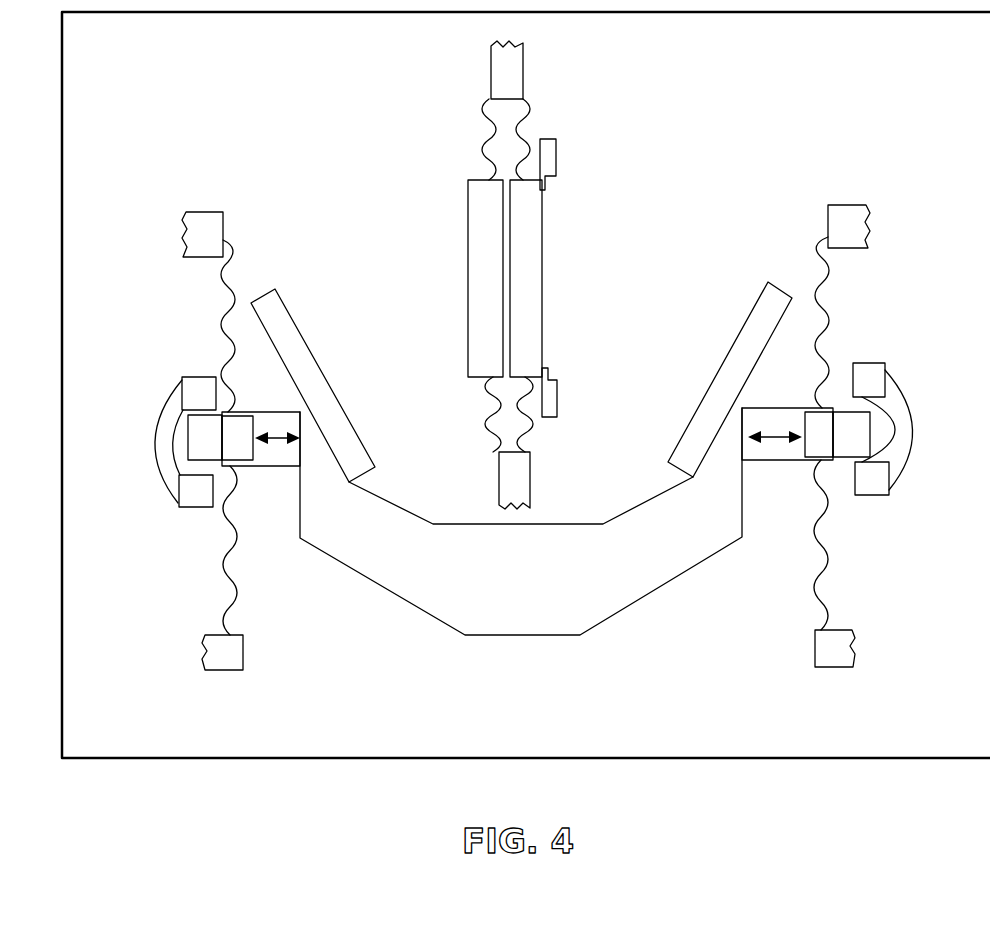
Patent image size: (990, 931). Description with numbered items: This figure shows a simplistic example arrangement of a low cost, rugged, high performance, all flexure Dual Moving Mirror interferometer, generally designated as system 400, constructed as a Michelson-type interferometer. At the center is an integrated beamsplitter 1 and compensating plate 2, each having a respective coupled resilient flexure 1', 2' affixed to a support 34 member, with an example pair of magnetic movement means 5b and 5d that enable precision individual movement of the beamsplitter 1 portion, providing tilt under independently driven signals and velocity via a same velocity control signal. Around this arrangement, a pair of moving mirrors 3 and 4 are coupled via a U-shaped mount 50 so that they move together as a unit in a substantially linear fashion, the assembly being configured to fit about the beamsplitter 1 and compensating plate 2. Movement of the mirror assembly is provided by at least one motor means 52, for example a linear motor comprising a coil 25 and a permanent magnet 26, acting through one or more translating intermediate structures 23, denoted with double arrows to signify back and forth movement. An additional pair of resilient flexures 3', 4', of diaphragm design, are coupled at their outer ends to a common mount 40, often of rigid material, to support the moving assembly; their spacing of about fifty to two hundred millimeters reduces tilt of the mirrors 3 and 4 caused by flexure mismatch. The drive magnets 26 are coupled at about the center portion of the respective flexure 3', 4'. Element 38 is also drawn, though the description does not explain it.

The all flexure interferometer system 400 is at (195, 75).
The U-shaped mount 50 is at (499, 596).
The moving mirror 3 is at (313, 379).
The moving mirror 4 is at (730, 379).
The translating intermediate structure 23 is at (256, 410).
The permanent magnet 26 is at (216, 453).
The coil 25 is at (190, 385).
The motor means 52 is at (152, 479).
The common mount 40 is at (203, 212).
The control lead 38 is at (245, 650).
The resilient flexure 3' is at (273, 428).
The resilient flexure 4' is at (779, 426).
The support member 34 is at (523, 52).
The resilient flexure 2' is at (439, 275).
The resilient flexure 1' is at (575, 267).
The compensating plate 2 is at (485, 278).
The beamsplitter 1 is at (526, 278).
The magnetic movement means 5b is at (556, 157).
The magnetic movement means 5d is at (558, 383).